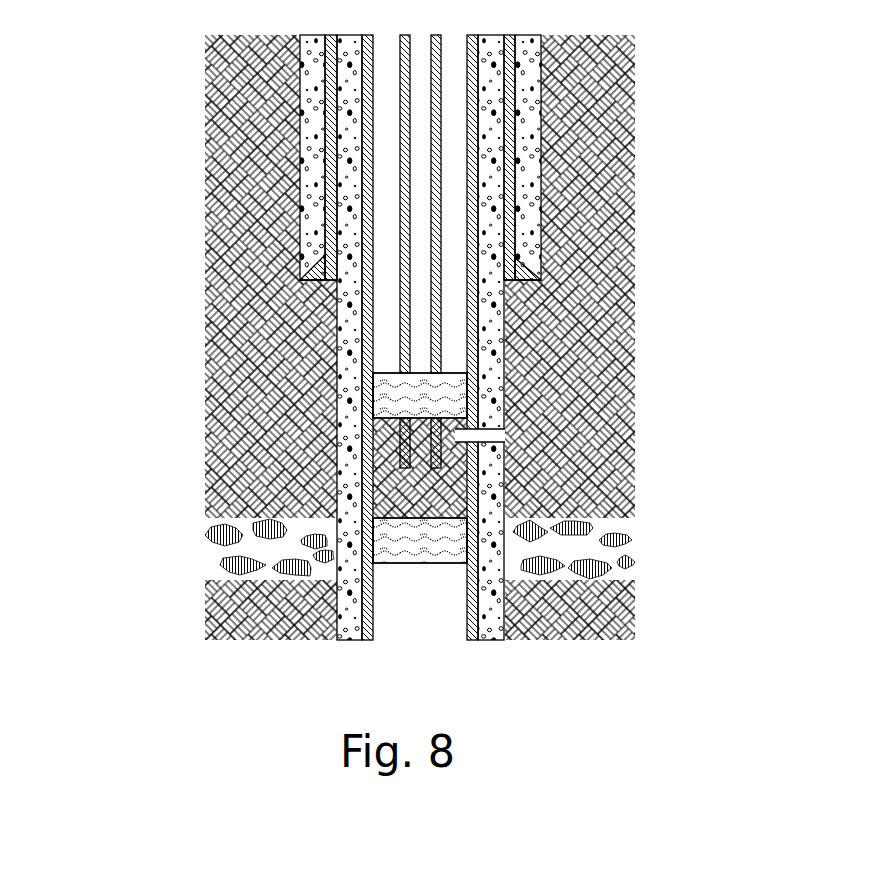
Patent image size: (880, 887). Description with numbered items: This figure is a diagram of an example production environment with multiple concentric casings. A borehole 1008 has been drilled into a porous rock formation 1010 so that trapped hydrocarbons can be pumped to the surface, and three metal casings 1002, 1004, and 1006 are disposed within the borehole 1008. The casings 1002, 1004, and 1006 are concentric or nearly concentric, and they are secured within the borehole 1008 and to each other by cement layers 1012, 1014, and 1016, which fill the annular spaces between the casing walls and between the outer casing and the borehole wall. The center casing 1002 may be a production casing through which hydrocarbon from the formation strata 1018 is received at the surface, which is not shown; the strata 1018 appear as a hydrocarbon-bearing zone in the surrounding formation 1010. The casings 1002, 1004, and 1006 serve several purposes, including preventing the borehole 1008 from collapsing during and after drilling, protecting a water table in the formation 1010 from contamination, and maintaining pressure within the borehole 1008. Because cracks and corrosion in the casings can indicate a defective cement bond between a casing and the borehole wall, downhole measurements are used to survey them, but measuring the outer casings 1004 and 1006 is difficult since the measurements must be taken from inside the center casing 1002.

The center casing 1002 is at (403, 365).
The casing 1004 is at (363, 242).
The casing 1006 is at (330, 87).
The borehole 1008 is at (535, 232).
The rock formation 1010 is at (598, 102).
The cement layer 1012 is at (382, 310).
The cement layer 1014 is at (349, 160).
The cement layer 1016 is at (307, 47).
The formation strata 1018 is at (597, 473).